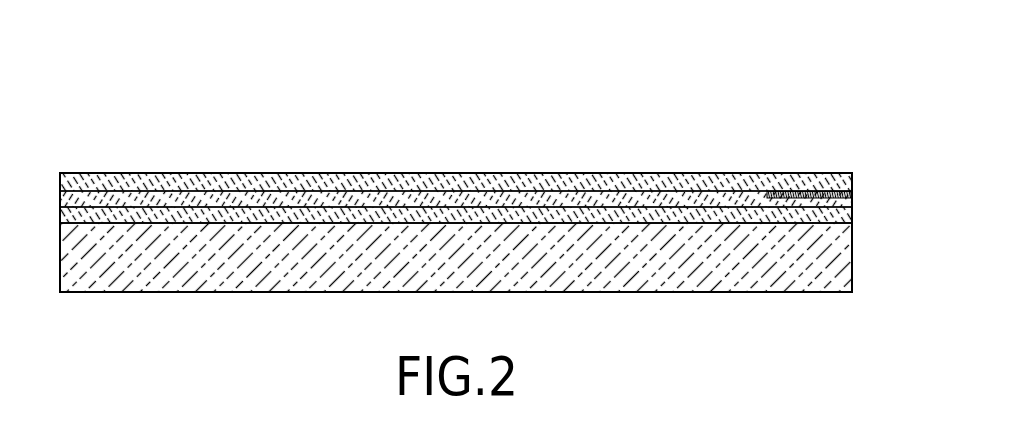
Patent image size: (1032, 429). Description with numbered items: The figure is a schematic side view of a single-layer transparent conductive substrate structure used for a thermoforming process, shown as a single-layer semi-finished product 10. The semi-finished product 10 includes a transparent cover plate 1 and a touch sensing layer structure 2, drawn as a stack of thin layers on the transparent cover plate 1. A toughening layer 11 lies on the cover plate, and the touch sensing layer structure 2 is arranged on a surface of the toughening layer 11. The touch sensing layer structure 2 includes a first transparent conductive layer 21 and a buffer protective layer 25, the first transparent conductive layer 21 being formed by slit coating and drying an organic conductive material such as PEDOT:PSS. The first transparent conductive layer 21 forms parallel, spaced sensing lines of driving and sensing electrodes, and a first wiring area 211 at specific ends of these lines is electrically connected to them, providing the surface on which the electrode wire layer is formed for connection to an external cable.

The single-layer semi-finished product 10 is at (469, 24).
The touch sensing layer structure 2 is at (54, 173).
The buffer protective layer 25 is at (668, 189).
The first transparent conductive layer 21 is at (852, 206).
The first wiring area 211 is at (852, 193).
The toughening layer 11 is at (852, 218).
The transparent cover plate 1 is at (725, 273).